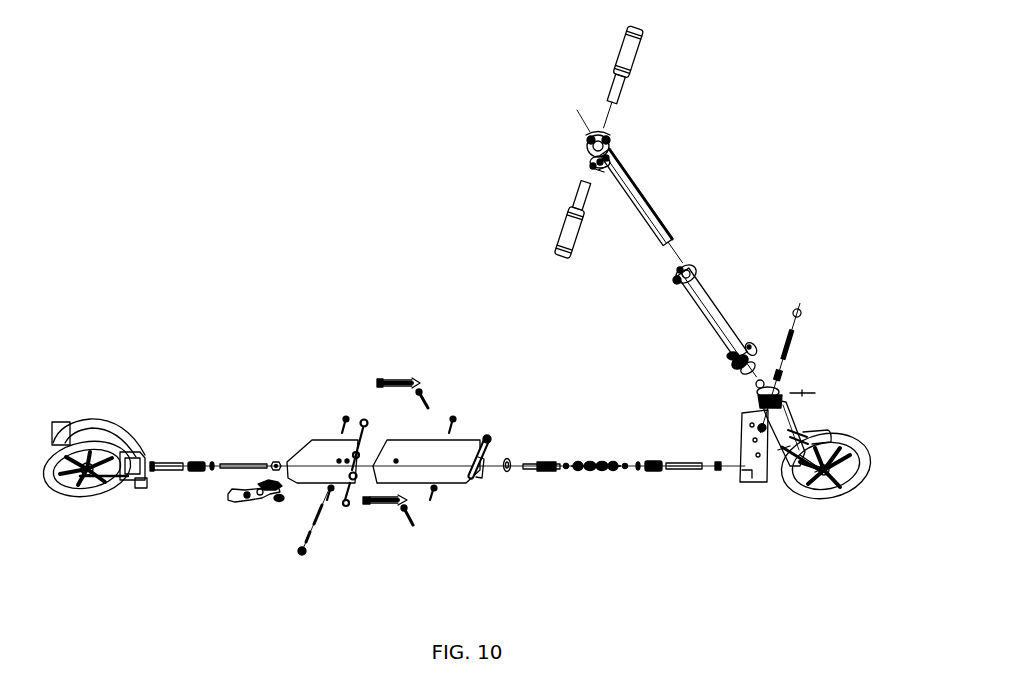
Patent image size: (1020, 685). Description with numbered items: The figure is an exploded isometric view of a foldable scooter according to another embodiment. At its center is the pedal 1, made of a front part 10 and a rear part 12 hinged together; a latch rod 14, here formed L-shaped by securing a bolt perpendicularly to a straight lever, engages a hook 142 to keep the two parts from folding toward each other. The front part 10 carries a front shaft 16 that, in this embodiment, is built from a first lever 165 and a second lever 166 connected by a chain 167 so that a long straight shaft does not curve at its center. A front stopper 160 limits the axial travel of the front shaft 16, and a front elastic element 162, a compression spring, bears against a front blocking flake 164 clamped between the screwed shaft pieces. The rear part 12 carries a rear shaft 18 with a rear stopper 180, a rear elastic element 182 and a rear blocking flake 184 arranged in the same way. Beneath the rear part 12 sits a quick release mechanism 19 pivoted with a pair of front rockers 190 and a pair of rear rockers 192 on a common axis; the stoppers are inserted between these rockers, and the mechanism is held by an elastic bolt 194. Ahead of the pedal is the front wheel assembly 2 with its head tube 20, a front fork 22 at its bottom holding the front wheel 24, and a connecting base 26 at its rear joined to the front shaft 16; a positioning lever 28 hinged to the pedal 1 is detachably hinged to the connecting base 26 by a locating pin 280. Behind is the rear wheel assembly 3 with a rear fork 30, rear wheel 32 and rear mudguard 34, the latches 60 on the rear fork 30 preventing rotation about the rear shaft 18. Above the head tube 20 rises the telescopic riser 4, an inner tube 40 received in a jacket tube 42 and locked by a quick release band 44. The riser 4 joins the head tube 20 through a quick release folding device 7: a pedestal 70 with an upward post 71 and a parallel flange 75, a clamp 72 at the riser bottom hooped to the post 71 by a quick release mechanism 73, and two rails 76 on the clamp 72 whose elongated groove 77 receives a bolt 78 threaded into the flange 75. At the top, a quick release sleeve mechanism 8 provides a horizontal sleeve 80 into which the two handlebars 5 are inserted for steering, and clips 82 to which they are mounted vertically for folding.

The pedal 1 is at (386, 450).
The front part 10 is at (437, 452).
The rear part 12 is at (330, 447).
The latch rod 14 is at (393, 503).
The hook 142 is at (332, 505).
The front shaft 16 is at (622, 457).
The front stopper 160 is at (505, 457).
The front elastic element 162 is at (653, 474).
The front blocking flake 164 is at (636, 471).
The first lever 165 is at (669, 436).
The second lever 166 is at (541, 463).
The chain 167 is at (607, 464).
The rear shaft 18 is at (177, 463).
The rear stopper 180 is at (277, 460).
The rear elastic element 182 is at (195, 473).
The rear blocking flake 184 is at (212, 472).
The quick release mechanism 19 is at (258, 489).
The front rockers 190 is at (280, 503).
The rear rockers 192 is at (262, 482).
The elastic bolt 194 is at (304, 556).
The front wheel assembly 2 is at (790, 485).
The head tube 20 is at (775, 468).
The front fork 22 is at (796, 468).
The front wheel 24 is at (838, 496).
The connecting base 26 is at (748, 470).
The positioning lever 28 is at (491, 471).
The locating pin 280 is at (800, 312).
The rear wheel assembly 3 is at (111, 440).
The rear fork 30 is at (122, 452).
The rear wheel 32 is at (45, 433).
The rear mudguard 34 is at (85, 435).
The riser 4 is at (684, 264).
The inner tube 40 is at (650, 210).
The jacket tube 42 is at (719, 304).
The quick release band 44 is at (693, 270).
The handlebars 5 is at (628, 52).
The latches 60 is at (140, 486).
The quick release folding device 7 is at (709, 375).
The pedestal 70 is at (726, 414).
The post 71 is at (752, 387).
The clamp 72 is at (732, 362).
The quick release mechanism 73 is at (728, 355).
The flange 75 is at (757, 396).
The rails 76 is at (740, 372).
The elongated groove 77 is at (752, 350).
The bolt 78 is at (803, 393).
The quick release sleeve mechanism 8 is at (547, 142).
The horizontal sleeve 80 is at (588, 148).
The clips 82 is at (594, 170).